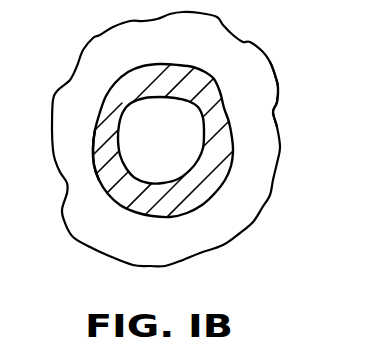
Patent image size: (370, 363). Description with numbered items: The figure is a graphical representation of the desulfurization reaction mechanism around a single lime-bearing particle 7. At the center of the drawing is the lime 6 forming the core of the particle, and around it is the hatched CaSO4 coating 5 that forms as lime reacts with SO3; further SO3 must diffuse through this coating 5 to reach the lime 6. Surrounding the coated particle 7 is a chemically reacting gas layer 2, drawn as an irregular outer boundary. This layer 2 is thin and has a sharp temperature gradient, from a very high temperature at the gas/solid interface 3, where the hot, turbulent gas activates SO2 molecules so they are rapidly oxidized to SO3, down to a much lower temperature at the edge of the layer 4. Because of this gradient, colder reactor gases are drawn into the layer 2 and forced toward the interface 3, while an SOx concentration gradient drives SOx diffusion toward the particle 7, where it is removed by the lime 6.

The chemically reacting gas layer 2 is at (200, 238).
The gas/solid interface 3 is at (224, 72).
The edge of the layer 4 is at (277, 93).
The CaSO4 coating 5 is at (208, 163).
The lime 6 is at (178, 137).
The lime-bearing particle 7 is at (89, 163).